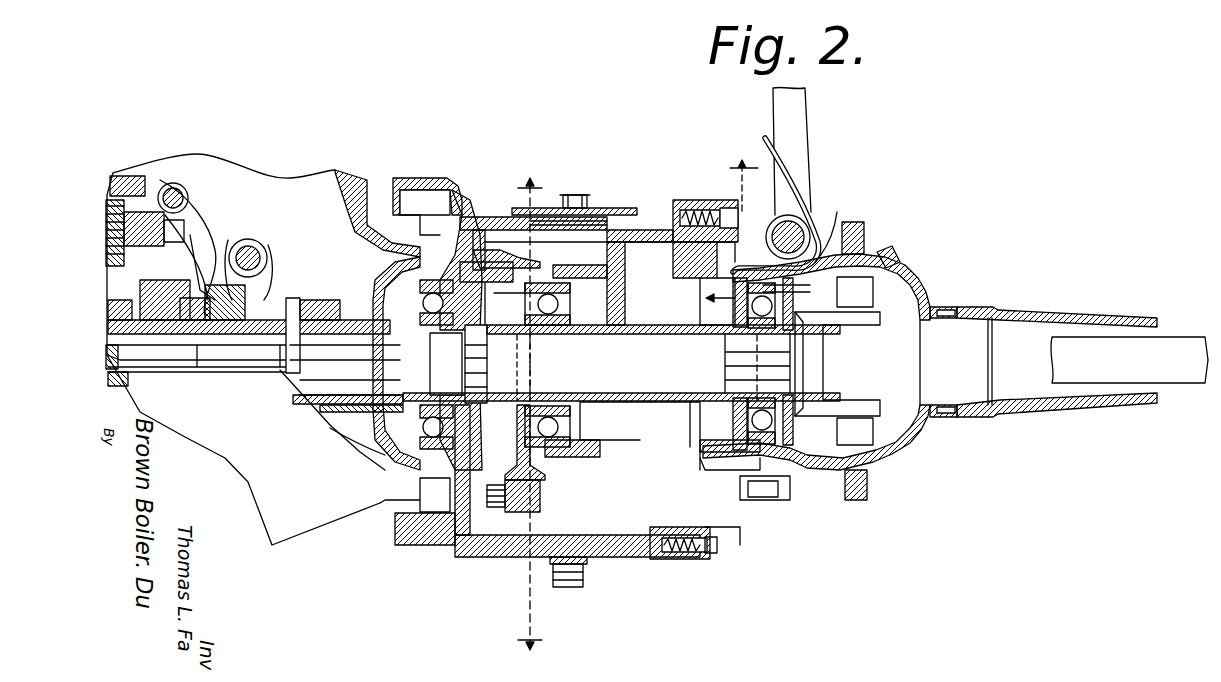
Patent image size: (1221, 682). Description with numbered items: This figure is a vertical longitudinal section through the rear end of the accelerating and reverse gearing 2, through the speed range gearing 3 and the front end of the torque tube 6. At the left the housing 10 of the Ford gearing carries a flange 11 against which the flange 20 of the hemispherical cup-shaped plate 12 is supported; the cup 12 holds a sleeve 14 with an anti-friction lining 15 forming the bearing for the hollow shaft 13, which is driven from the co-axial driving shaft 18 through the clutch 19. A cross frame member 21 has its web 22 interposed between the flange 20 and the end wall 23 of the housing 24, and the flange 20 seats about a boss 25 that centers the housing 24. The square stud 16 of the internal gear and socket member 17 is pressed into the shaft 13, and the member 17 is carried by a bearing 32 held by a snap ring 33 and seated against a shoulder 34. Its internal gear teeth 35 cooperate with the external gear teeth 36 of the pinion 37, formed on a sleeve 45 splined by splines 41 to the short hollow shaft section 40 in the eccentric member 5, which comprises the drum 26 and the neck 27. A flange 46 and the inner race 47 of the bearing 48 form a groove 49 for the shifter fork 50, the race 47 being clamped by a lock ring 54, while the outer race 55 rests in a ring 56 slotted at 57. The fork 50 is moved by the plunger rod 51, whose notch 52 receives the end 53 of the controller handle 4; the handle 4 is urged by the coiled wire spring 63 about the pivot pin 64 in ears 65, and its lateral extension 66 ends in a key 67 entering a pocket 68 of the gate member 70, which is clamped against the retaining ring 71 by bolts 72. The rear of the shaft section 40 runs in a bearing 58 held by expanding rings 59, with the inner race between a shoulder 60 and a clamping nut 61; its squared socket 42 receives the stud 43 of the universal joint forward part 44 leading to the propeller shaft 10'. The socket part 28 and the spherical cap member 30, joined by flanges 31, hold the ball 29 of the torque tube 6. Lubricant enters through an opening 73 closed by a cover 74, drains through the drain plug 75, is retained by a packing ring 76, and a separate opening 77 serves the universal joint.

The accelerating and reverse gearing 2 is at (330, 165).
The speed range gearing 3 is at (556, 172).
The controller handle 4 is at (800, 152).
The eccentric member 5 is at (612, 212).
The torque tube 6 is at (1072, 316).
The housing 10 is at (377, 201).
The propeller shaft 10' is at (1129, 347).
The flange 11 is at (422, 230).
The hemispherical cup-shaped plate 12 is at (393, 278).
The hollow shaft 13 is at (300, 402).
The sleeve 14 is at (335, 424).
The lining 15 is at (328, 326).
The square stud 16 is at (330, 378).
The internal gear and socket member 17 is at (377, 428).
The driving shaft 18 is at (170, 360).
The clutch 19 is at (115, 198).
The flange 20 is at (440, 216).
The cross frame member 21 is at (415, 178).
The web 22 is at (460, 190).
The end wall 23 is at (460, 548).
The housing 24 is at (628, 216).
The boss 25 is at (400, 514).
The drum 26 is at (650, 230).
The neck 27 is at (745, 500).
The socket part 28 is at (833, 476).
The ball 29 is at (885, 465).
The spherical cap member 30 is at (910, 267).
The flanges 31 is at (862, 222).
The bearing 32 is at (380, 446).
The snap ring 33 is at (368, 452).
The shoulder 34 is at (435, 500).
The internal gear teeth 35 is at (548, 255).
The external gear teeth 36 is at (455, 342).
The pinion 37 is at (470, 382).
The short hollow shaft section 40 is at (580, 424).
The splines 41 is at (603, 318).
The squared socket 42 is at (712, 400).
The stud 43 is at (740, 350).
The universal joint forward part 44 is at (818, 358).
The sleeve 45 is at (520, 400).
The flange 46 is at (488, 364).
The inner race 47 is at (552, 400).
The bearing 48 is at (575, 420).
The groove 49 is at (555, 305).
The shifter fork 50 is at (540, 480).
The plunger rod 51 is at (640, 557).
The notch 52 is at (762, 500).
The lever end 53 is at (785, 500).
The lock ring 54 is at (583, 402).
The outer race 55 is at (548, 436).
The ring 56 is at (573, 280).
The slot 57 is at (600, 440).
The bearing 58 is at (785, 312).
The expanding rings 59 is at (700, 432).
The shoulder 60 is at (700, 318).
The clamping nut 61 is at (803, 322).
The coiled wire spring 63 is at (795, 180).
The pivot pin 64 is at (805, 226).
The ears 65 is at (830, 248).
The lateral extension 66 is at (742, 252).
The key 67 is at (692, 262).
The pocket 68 is at (727, 208).
The gate member 70 is at (700, 200).
The retaining ring 71 is at (732, 529).
The bolts 72 is at (684, 210).
The opening 73 is at (543, 213).
The cover 74 is at (576, 195).
The drain plug 75 is at (569, 587).
The packing ring 76 is at (668, 558).
The opening 77 is at (890, 250).